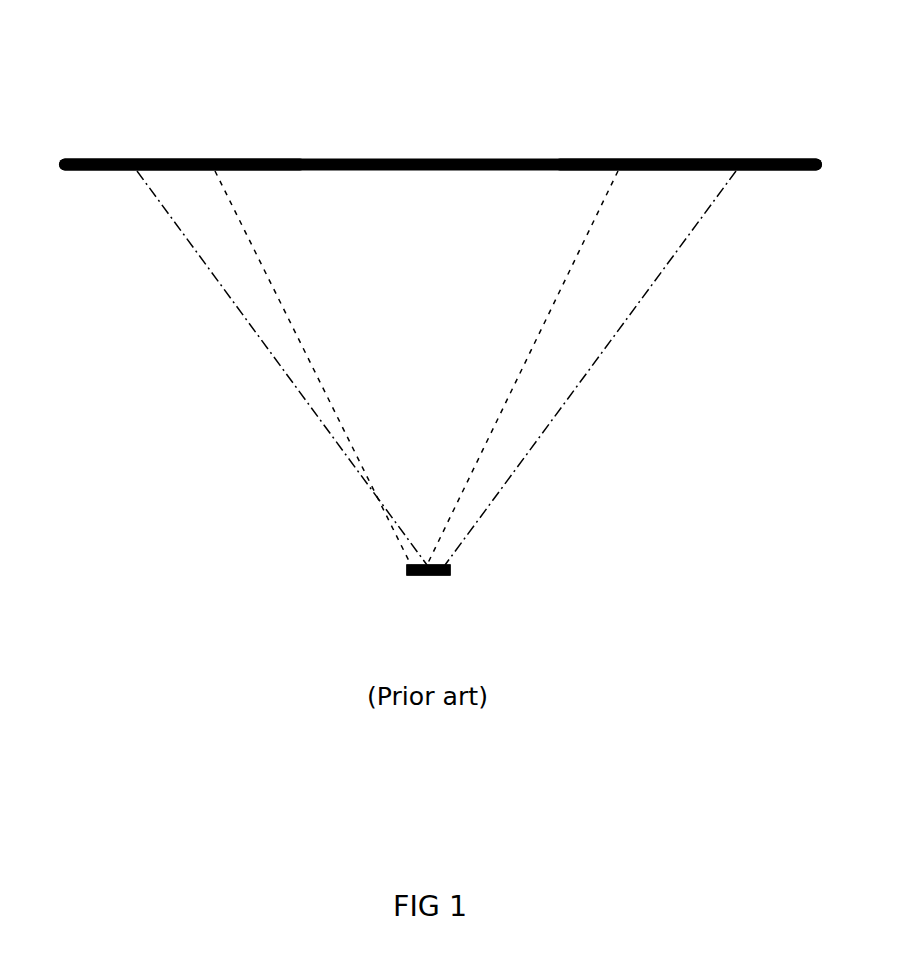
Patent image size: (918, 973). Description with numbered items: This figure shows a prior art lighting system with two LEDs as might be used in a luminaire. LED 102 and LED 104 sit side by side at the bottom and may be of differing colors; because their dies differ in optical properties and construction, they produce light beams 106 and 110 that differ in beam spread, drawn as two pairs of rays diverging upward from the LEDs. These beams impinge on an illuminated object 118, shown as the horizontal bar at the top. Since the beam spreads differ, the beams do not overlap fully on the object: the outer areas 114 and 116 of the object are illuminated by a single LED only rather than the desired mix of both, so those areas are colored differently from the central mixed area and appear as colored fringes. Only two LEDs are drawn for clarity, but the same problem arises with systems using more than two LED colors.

The LED 102 is at (408, 570).
The LED 104 is at (448, 571).
The light beam 106 is at (290, 317).
The light beam 110 is at (195, 253).
The area 114 is at (167, 158).
The area 116 is at (682, 158).
The illuminated object 118 is at (408, 158).